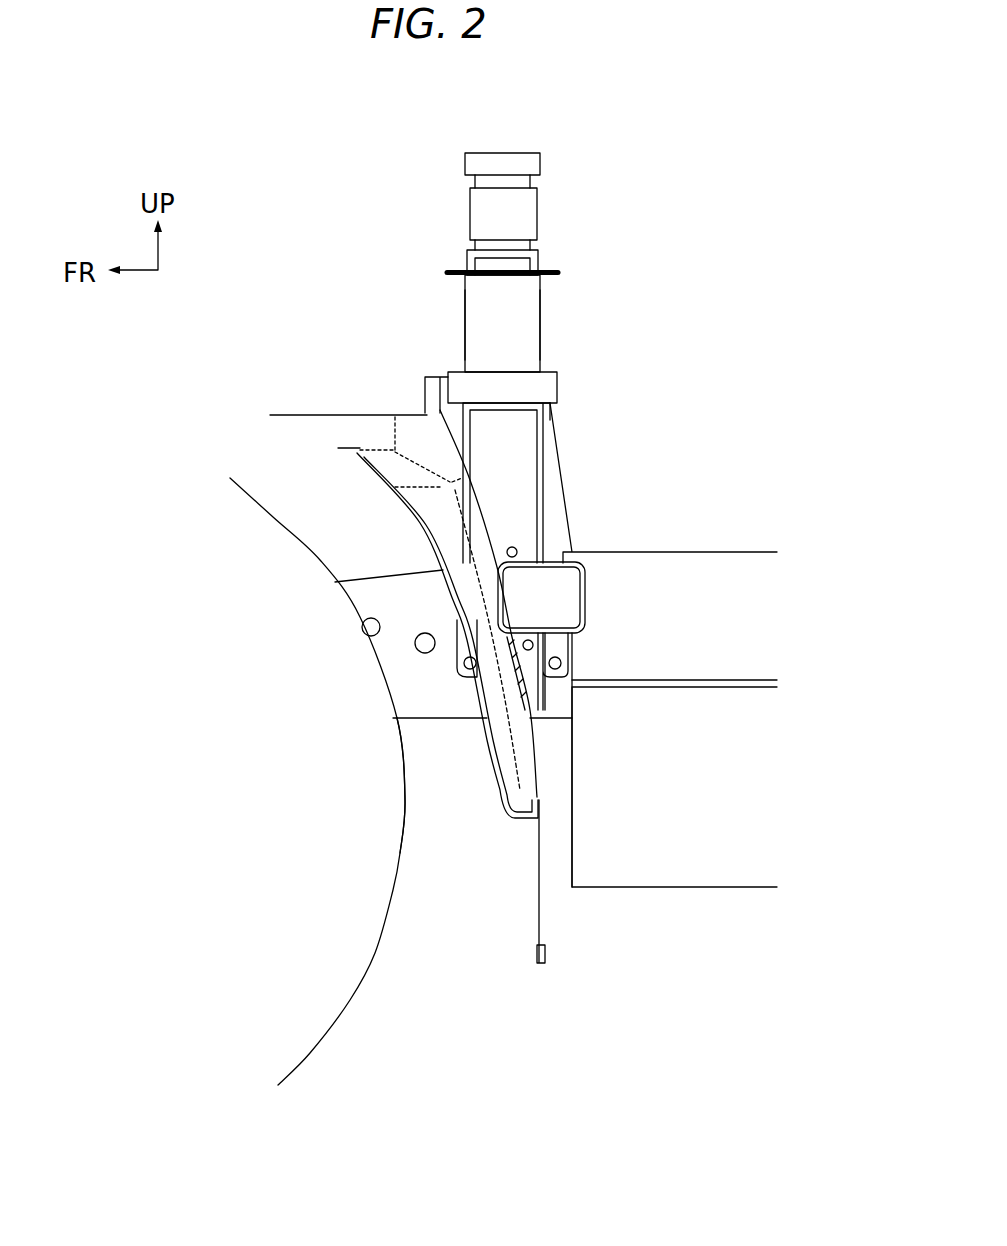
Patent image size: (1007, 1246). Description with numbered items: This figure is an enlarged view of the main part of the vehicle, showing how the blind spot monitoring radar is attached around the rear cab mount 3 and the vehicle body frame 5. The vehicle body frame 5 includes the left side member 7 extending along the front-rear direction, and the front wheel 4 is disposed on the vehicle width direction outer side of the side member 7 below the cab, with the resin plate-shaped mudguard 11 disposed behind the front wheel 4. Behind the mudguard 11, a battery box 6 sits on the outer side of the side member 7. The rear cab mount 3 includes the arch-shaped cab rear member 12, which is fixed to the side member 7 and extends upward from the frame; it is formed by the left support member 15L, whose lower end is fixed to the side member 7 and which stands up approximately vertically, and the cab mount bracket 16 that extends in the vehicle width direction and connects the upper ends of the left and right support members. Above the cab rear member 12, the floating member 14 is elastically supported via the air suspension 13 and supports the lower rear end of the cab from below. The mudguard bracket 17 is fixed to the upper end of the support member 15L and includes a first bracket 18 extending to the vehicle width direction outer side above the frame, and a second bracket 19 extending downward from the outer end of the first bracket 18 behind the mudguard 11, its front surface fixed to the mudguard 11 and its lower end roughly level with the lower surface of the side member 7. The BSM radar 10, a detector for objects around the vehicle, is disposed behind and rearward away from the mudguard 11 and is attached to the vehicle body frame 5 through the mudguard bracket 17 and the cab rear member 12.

The rear cab mount 3 is at (560, 266).
The front wheel 4 is at (375, 950).
The vehicle body frame 5 is at (422, 738).
The battery box 6 is at (665, 887).
The side member 7 is at (468, 722).
The BSM radar 10 is at (585, 587).
The mudguard 11 is at (470, 490).
The cab rear member 12 is at (540, 312).
The air suspension 13 is at (470, 205).
The floating member 14 is at (540, 158).
The left support member 15L is at (540, 350).
The cab mount bracket 16 is at (542, 262).
The mudguard bracket 17 is at (556, 500).
The first bracket 18 is at (557, 393).
The second bracket 19 is at (543, 440).